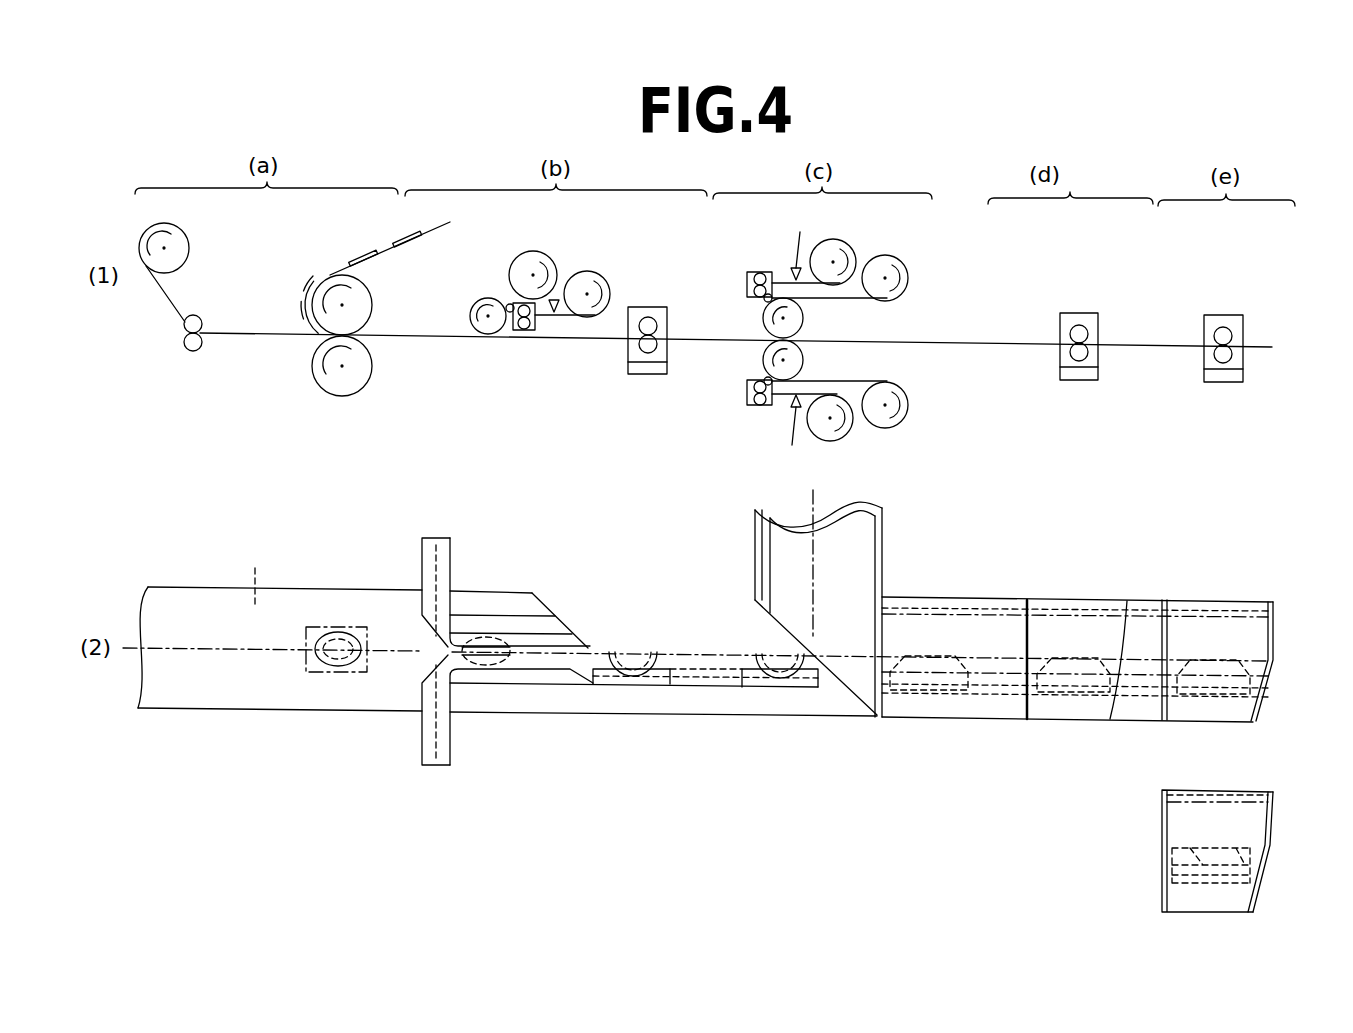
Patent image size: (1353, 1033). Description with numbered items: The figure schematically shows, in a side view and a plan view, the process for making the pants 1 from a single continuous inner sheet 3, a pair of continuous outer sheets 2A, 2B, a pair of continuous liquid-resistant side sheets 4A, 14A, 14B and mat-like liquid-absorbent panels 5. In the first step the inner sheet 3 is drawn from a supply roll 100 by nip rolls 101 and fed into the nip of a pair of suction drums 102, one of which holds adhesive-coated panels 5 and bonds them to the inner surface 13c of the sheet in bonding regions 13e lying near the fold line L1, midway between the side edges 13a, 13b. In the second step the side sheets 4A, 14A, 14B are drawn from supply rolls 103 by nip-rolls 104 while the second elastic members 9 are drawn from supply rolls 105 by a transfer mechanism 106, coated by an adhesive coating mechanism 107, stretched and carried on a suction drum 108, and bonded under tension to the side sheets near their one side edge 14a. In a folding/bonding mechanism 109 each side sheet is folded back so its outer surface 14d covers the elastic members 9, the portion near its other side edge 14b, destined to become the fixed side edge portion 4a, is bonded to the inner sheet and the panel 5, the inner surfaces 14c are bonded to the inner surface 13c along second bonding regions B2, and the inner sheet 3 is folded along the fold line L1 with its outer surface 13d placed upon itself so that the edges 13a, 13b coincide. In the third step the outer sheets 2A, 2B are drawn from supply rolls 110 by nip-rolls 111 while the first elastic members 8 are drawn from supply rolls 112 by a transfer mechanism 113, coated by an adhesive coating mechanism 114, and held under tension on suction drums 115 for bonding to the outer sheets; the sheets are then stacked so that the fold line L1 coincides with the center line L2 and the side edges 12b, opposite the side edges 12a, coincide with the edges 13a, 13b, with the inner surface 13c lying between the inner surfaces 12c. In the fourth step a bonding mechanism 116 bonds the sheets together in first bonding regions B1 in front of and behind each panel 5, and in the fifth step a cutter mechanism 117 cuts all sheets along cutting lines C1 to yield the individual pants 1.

The pants 1 is at (1279, 786).
The inner sheet 3 is at (170, 306).
The liquid-absorbent panel 5 is at (352, 258).
The first elastic member 8 is at (768, 290).
The second elastic member 9 is at (571, 318).
The liquid-resistant side sheet 4A is at (498, 300).
The fixed side edge portion 4a is at (1255, 900).
The outer sheet 2A is at (870, 302).
The outer sheet 2B is at (868, 380).
The side edge of outer sheet 12a is at (757, 530).
The side edge of outer sheet 12b is at (886, 562).
The inner surface of outer sheet 12c is at (885, 512).
The side edge of inner sheet 13a is at (193, 587).
The side edge of inner sheet 13b is at (238, 710).
The inner surface of inner sheet 13c is at (300, 692).
The outer surface of inner sheet 13d is at (259, 574).
The bonding region 13e is at (320, 627).
The lower folding plate 14A is at (422, 757).
The upper folding plate 14B is at (430, 537).
The side edge of side sheet 14a is at (566, 644).
The side edge of side sheet 14b is at (420, 575).
The inner surface of side sheet 14c is at (441, 535).
The outer surface of side sheet 14d is at (495, 623).
The fold line L1 is at (128, 643).
The center line L2 is at (812, 503).
The first bonding region B1 is at (1032, 628).
The second bonding region B2 is at (608, 655).
The cutting line C1 is at (1278, 617).
The supply roll 100 is at (188, 242).
The nip rolls 101 is at (200, 315).
The suction drums 102 is at (366, 292).
The supply rolls 103 is at (535, 251).
The nip-rolls 104 is at (472, 320).
The supply rolls 105 is at (605, 278).
The transfer mechanism 106 is at (524, 330).
The adhesive coating mechanism 107 is at (558, 298).
The suction drum 108 is at (508, 302).
The folding/bonding mechanism 109 is at (650, 307).
The supply rolls 110 is at (898, 265).
The nip-rolls 111 is at (805, 318).
The supply rolls 112 is at (845, 245).
The transfer mechanism 113 is at (748, 275).
The adhesive coating mechanism 114 is at (805, 336).
The suction drums 115 is at (760, 305).
The bonding mechanism 116 is at (1081, 315).
The cutter mechanism 117 is at (1216, 315).